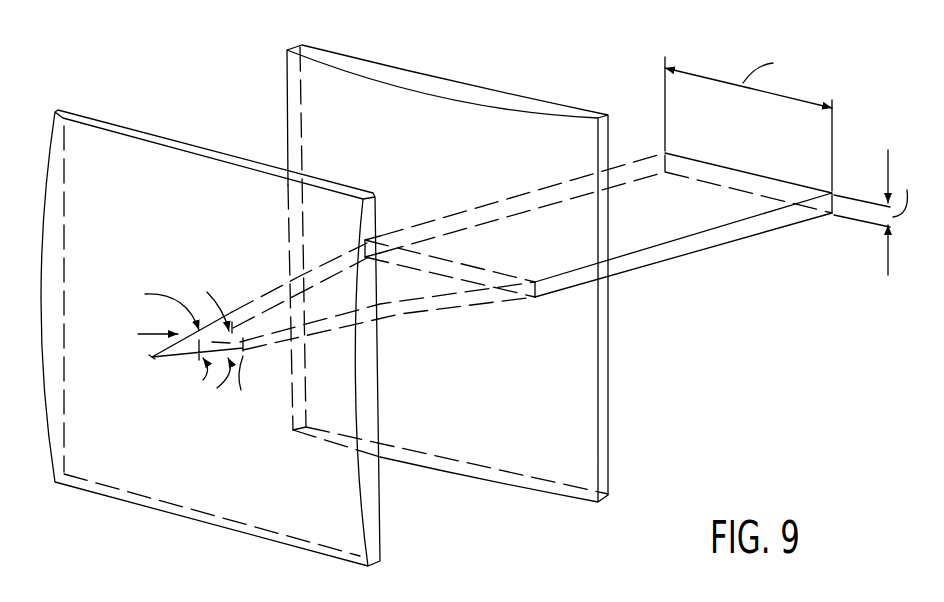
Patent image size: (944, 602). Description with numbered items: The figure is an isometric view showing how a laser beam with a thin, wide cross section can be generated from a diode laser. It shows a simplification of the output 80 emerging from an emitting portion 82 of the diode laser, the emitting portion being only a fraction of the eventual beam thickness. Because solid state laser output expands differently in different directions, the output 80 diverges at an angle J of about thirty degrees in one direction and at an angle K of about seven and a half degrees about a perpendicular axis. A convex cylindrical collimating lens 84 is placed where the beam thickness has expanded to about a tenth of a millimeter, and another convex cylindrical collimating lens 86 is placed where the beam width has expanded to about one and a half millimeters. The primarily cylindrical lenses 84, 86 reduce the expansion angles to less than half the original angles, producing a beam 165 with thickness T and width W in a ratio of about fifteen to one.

The output 80 is at (206, 345).
The emitting portion 82 is at (153, 362).
The convex cylindrical collimating lens 84 is at (381, 543).
The convex cylindrical collimating lens 86 is at (610, 447).
The beam 165 is at (677, 257).